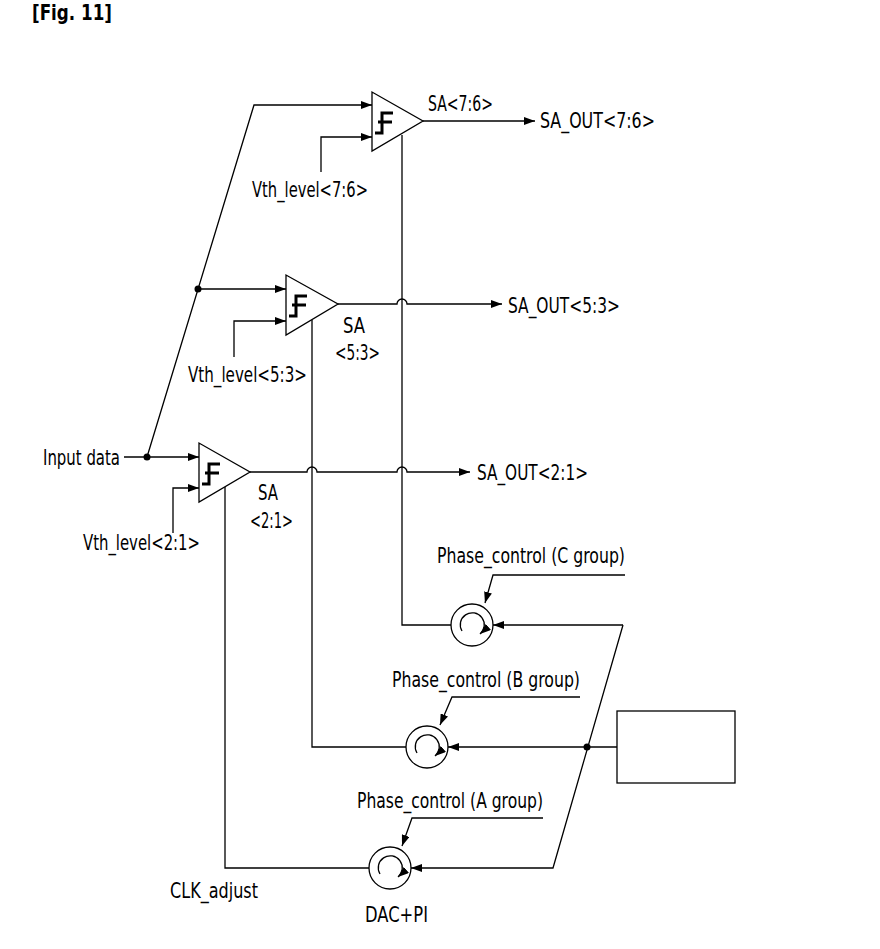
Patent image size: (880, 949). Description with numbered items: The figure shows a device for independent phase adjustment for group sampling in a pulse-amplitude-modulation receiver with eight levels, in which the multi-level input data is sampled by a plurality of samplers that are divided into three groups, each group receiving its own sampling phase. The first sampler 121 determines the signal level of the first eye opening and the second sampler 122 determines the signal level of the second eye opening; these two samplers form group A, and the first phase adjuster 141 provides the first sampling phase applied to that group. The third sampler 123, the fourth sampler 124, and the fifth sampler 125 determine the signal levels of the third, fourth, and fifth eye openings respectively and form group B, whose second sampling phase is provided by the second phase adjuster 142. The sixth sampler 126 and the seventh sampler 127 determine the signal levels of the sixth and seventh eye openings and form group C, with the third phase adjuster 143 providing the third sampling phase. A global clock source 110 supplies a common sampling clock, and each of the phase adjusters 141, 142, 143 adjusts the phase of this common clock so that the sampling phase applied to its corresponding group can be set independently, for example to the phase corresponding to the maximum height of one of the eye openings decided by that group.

The global clock source 110 is at (652, 783).
The first sampler 121 is at (245, 453).
The second sampler 122 is at (227, 455).
The third sampler 123 is at (302, 278).
The fourth sampler 124 is at (302, 278).
The fifth sampler 125 is at (312, 248).
The sixth sampler 126 is at (442, 137).
The seventh sampler 127 is at (414, 127).
The first phase adjuster 141 is at (375, 854).
The second phase adjuster 142 is at (412, 732).
The third phase adjuster 143 is at (457, 611).